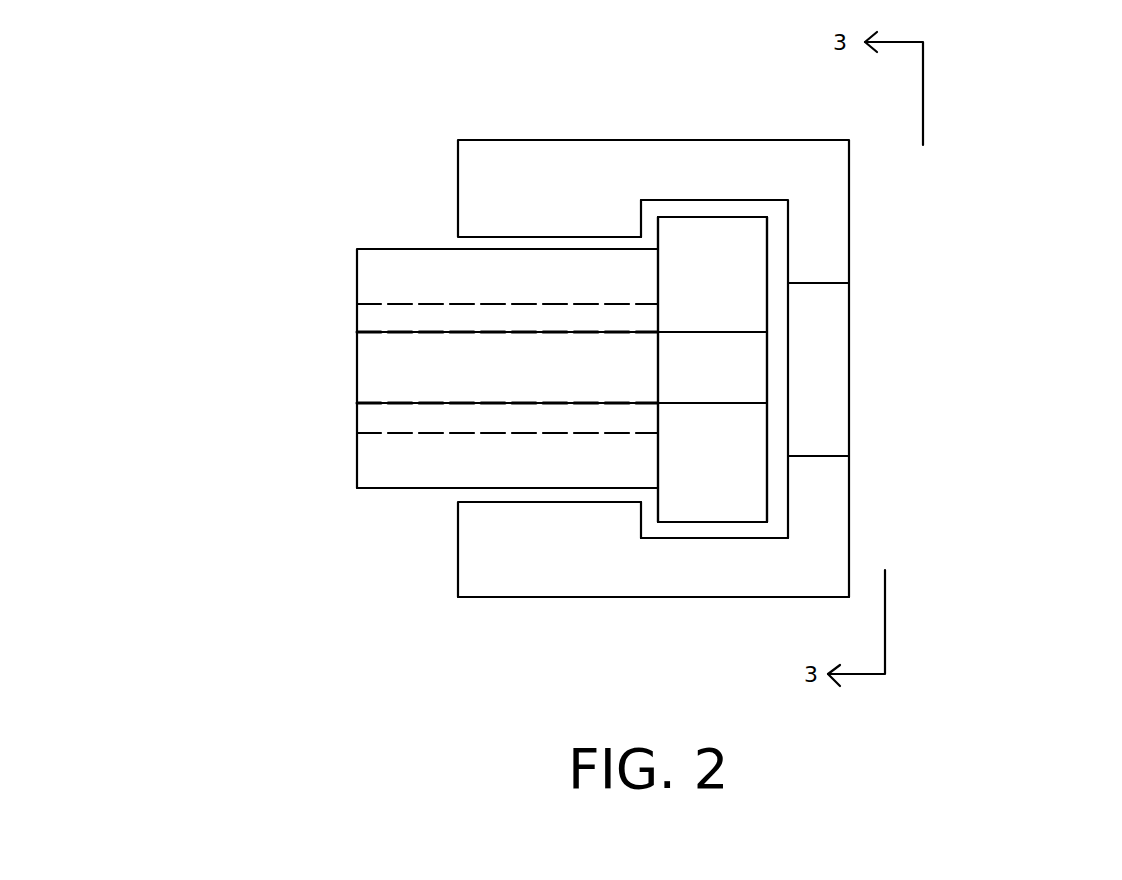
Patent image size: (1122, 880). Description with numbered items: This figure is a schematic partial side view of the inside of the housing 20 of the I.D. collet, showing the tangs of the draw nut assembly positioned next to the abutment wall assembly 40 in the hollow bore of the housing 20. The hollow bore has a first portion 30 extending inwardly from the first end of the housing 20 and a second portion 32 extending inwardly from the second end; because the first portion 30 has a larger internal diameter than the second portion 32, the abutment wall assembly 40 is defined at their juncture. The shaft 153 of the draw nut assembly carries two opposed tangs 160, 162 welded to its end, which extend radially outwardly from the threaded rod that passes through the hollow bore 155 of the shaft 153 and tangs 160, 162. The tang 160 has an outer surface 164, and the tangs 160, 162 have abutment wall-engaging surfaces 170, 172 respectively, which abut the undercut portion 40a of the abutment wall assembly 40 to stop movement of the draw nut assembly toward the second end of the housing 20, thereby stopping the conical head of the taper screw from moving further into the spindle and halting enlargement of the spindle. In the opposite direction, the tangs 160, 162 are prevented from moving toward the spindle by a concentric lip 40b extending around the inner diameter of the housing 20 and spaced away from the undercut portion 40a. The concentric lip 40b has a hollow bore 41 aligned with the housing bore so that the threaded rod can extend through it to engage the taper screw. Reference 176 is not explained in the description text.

The housing 20 is at (699, 623).
The first portion 30 is at (672, 566).
The second portion 32 is at (462, 238).
The abutment wall assembly 40 is at (925, 213).
The undercut portion 40a is at (647, 507).
The concentric lip 40b is at (822, 520).
The hollow bore 41 is at (822, 352).
The shaft 153 is at (388, 466).
The hollow bore 155 is at (356, 318).
The tang 160 is at (690, 217).
The tang 162 is at (747, 488).
The outer surface 164 is at (750, 217).
The abutment wall-engaging surface 170 is at (657, 230).
The abutment wall-engaging surface 172 is at (657, 459).
The flange bottom surface 176 is at (712, 488).